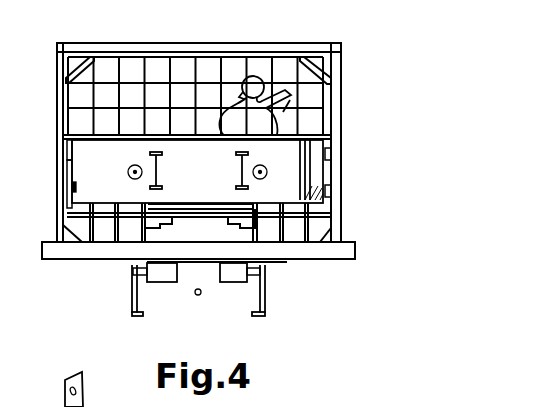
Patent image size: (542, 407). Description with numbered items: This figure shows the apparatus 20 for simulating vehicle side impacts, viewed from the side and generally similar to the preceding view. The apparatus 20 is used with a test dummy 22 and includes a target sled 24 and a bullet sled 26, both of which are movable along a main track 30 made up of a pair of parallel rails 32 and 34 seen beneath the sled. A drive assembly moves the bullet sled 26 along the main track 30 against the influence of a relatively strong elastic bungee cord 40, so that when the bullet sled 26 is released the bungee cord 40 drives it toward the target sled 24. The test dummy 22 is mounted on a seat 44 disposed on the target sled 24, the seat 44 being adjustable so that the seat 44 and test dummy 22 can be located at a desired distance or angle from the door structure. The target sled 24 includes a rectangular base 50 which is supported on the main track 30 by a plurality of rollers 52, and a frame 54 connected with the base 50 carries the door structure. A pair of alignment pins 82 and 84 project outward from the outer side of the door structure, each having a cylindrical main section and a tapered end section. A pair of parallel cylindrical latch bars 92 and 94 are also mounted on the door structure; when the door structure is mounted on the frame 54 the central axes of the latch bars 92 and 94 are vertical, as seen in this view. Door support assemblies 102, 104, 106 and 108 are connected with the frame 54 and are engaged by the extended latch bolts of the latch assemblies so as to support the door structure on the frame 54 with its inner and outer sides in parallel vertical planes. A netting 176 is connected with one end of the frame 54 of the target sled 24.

The apparatus 20 is at (370, 38).
The test dummy 22 is at (218, 127).
The target sled 24 is at (62, 36).
The bullet sled 26 is at (82, 186).
The main track 30 is at (219, 310).
The rail 32 is at (132, 297).
The rail 34 is at (268, 308).
The bungee cord 40 is at (195, 295).
The seat 44 is at (294, 110).
The rectangular base 50 is at (357, 254).
The rollers 52 is at (299, 280).
The frame 54 is at (147, 48).
The alignment pin 82 is at (97, 245).
The alignment pin 84 is at (229, 222).
The latch bar 92 is at (163, 163).
The latch bar 94 is at (237, 172).
The door support assembly 102 is at (335, 146).
The door support assembly 104 is at (342, 197).
The door support assembly 106 is at (68, 145).
The door support assembly 108 is at (65, 198).
The netting 176 is at (143, 98).